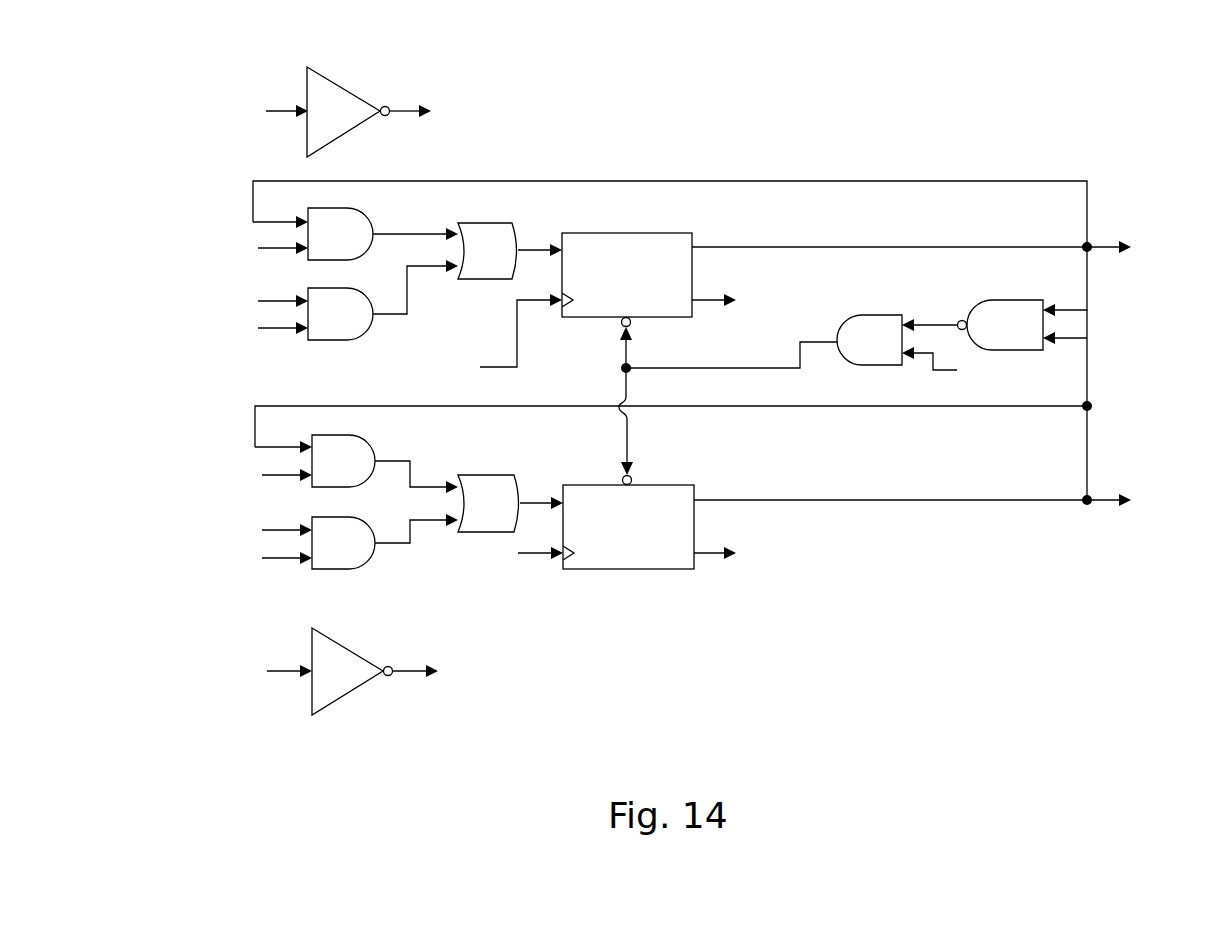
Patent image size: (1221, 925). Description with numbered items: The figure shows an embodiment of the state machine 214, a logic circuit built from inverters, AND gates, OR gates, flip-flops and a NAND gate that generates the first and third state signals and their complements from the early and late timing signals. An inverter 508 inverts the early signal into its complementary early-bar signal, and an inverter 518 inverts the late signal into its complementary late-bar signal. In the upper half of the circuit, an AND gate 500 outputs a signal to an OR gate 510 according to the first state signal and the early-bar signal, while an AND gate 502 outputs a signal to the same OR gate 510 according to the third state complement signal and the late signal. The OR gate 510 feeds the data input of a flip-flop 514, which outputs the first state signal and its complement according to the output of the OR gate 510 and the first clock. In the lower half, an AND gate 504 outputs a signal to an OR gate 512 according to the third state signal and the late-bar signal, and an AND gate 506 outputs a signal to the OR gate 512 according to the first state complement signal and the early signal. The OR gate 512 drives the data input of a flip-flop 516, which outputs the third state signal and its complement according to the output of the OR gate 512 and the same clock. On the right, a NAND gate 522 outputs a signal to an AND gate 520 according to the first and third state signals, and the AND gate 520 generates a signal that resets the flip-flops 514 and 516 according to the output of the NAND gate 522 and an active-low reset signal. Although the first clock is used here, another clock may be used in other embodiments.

The state machine 214 is at (1151, 104).
The AND gate 500 is at (367, 214).
The AND gate 502 is at (330, 341).
The AND gate 504 is at (372, 437).
The AND gate 506 is at (370, 560).
The inverter 508 is at (342, 84).
The OR gate 510 is at (484, 279).
The OR gate 512 is at (482, 474).
The flip-flop 514 is at (590, 318).
The flip-flop 516 is at (586, 485).
The inverter 518 is at (345, 648).
The AND gate 520 is at (866, 314).
The NAND gate 522 is at (984, 303).